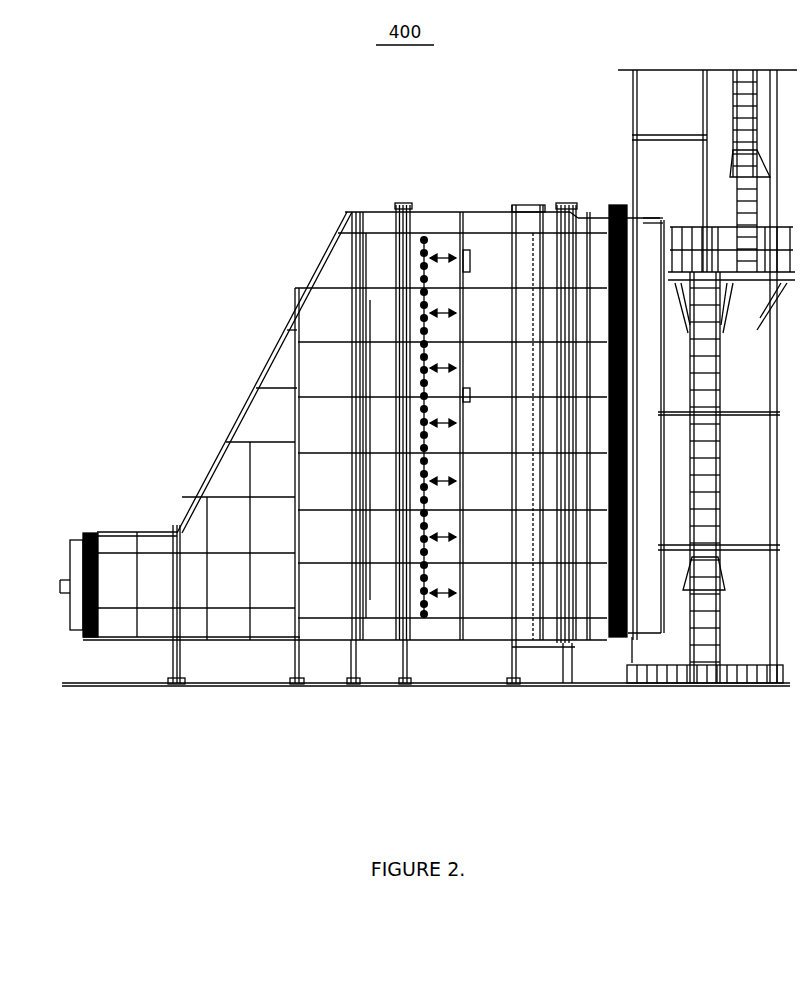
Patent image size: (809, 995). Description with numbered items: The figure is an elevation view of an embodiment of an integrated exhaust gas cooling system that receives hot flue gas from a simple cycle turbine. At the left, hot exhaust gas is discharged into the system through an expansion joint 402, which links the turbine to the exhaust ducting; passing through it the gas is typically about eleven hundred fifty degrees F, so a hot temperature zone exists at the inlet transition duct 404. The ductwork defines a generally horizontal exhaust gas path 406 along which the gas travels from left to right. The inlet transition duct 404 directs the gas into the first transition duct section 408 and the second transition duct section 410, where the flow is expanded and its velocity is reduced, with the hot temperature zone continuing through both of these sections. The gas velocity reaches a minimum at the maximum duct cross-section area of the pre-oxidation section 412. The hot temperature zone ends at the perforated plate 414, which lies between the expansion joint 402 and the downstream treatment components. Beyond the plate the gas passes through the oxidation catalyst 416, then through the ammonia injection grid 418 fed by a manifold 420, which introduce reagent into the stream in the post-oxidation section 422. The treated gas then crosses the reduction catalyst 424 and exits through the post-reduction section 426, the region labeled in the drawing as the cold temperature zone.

The expansion joint 402 is at (107, 660).
The inlet transition duct 404 is at (147, 527).
The exhaust gas path 406 is at (205, 692).
The first transition duct section 408 is at (227, 525).
The second transition duct section 410 is at (297, 280).
The pre-oxidation section 412 is at (350, 253).
The perforated plate 414 is at (349, 672).
The oxidation catalyst 416 is at (390, 233).
The ammonia injection grid 418 is at (432, 672).
The manifold 420 is at (486, 670).
The post-oxidation section 422 is at (493, 245).
The reduction catalyst 424 is at (570, 642).
The post-reduction section 426 is at (581, 245).